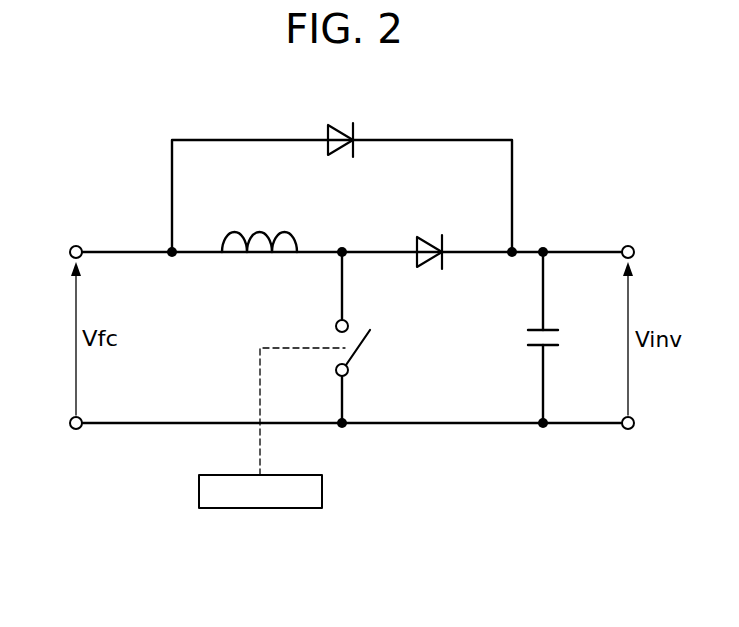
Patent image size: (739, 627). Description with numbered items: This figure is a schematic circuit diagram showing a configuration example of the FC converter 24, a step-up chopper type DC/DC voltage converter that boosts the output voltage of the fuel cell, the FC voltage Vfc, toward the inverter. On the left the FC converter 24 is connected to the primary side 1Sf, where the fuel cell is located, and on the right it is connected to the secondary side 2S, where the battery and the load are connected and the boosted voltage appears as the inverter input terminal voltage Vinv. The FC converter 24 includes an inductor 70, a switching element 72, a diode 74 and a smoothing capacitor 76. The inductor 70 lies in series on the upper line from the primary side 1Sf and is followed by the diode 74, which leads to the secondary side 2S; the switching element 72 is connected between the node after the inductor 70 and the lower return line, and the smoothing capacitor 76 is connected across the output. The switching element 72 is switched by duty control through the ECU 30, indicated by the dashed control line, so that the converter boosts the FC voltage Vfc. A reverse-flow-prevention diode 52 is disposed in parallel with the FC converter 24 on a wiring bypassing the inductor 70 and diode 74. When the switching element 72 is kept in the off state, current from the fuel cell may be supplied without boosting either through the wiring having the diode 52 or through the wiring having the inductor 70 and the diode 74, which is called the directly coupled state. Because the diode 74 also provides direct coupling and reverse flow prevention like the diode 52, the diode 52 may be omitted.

The FC converter 24 is at (421, 214).
The reverse-flow-prevention diode 52 is at (344, 126).
The inductor 70 is at (262, 229).
The switching element 72 is at (362, 338).
The diode 74 is at (431, 266).
The smoothing capacitor 76 is at (533, 338).
The ECU 30 is at (323, 485).
The primary side 1Sf is at (76, 243).
The secondary side 2S is at (628, 243).